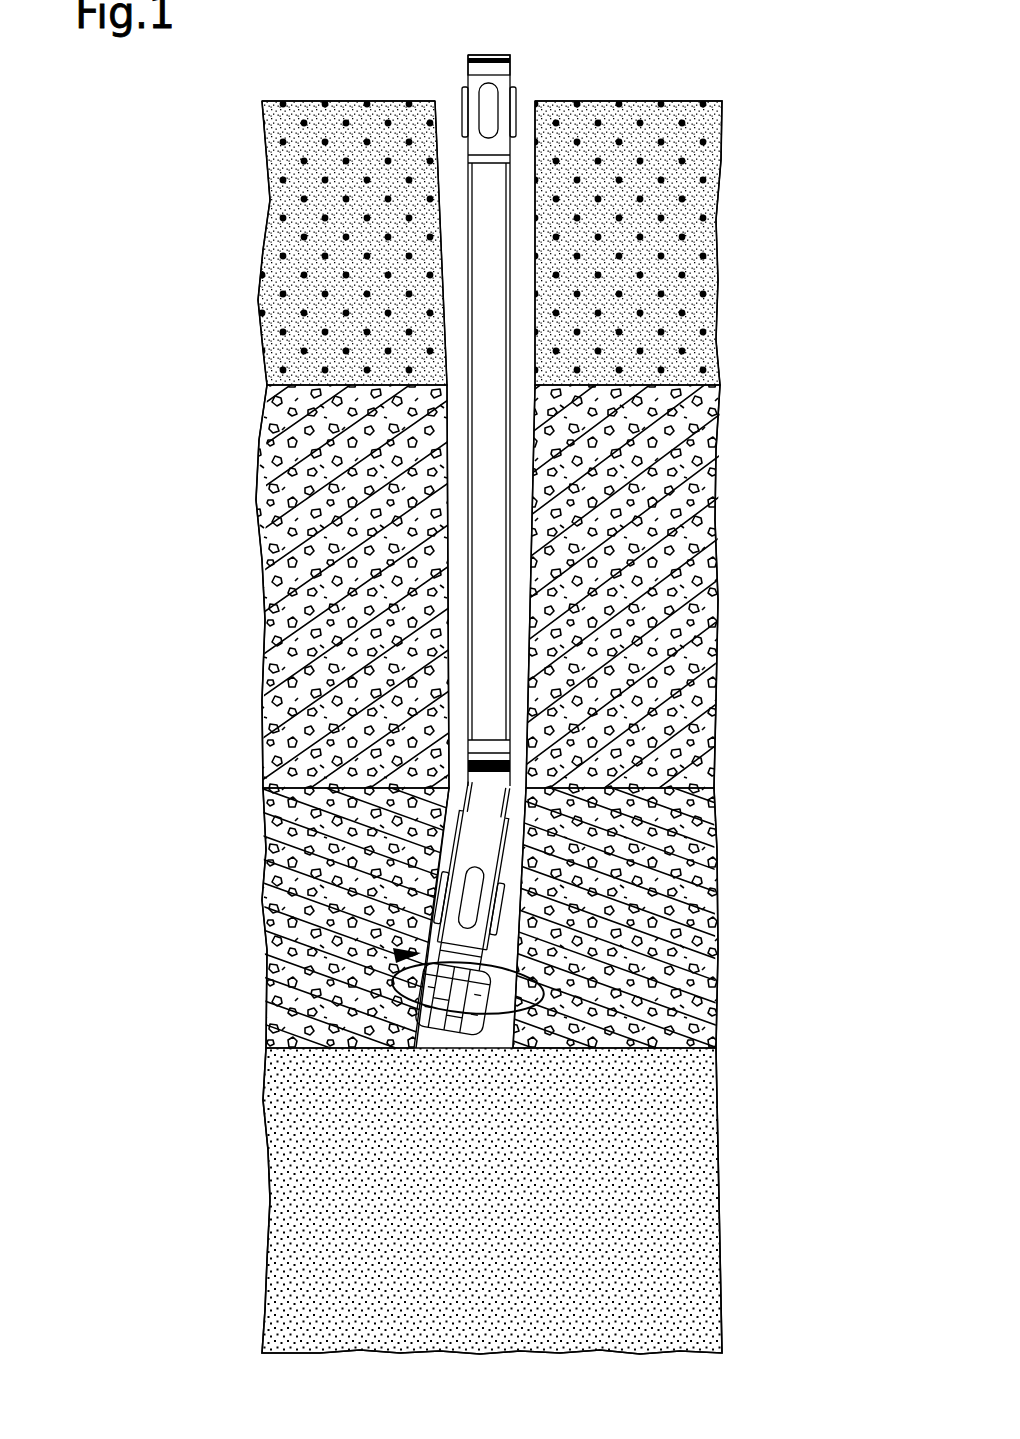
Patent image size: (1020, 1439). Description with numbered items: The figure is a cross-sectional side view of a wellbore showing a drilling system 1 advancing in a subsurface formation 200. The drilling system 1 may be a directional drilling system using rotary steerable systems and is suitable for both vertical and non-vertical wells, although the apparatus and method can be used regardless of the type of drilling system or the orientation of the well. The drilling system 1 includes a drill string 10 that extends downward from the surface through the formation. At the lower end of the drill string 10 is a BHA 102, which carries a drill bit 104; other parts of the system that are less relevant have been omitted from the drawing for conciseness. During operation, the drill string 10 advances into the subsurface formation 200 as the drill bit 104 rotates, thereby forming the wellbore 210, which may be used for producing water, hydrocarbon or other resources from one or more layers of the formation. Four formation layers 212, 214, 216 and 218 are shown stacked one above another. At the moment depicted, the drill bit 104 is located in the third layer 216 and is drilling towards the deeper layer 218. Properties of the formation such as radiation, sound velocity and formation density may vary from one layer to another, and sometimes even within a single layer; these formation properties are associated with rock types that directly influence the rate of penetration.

The drilling system 1 is at (496, 34).
The drill string 10 is at (495, 203).
The BHA 102 is at (482, 852).
The drill bit 104 is at (500, 967).
The subsurface formation 200 is at (236, 309).
The wellbore 210 is at (455, 193).
The formation layer 212 is at (327, 207).
The formation layer 214 is at (300, 503).
The formation layer 216 is at (323, 920).
The formation layer 218 is at (320, 1148).